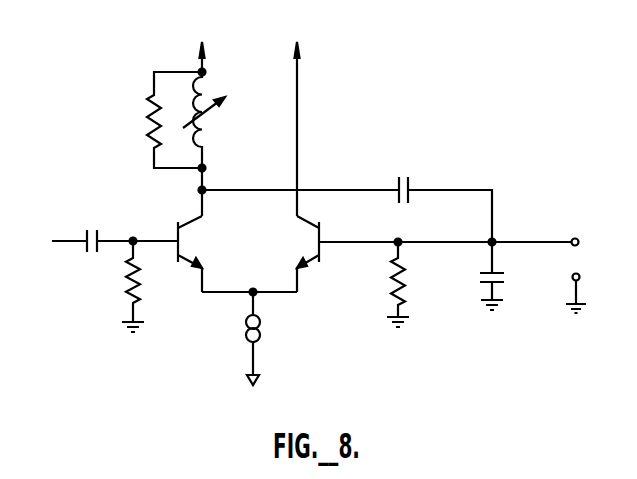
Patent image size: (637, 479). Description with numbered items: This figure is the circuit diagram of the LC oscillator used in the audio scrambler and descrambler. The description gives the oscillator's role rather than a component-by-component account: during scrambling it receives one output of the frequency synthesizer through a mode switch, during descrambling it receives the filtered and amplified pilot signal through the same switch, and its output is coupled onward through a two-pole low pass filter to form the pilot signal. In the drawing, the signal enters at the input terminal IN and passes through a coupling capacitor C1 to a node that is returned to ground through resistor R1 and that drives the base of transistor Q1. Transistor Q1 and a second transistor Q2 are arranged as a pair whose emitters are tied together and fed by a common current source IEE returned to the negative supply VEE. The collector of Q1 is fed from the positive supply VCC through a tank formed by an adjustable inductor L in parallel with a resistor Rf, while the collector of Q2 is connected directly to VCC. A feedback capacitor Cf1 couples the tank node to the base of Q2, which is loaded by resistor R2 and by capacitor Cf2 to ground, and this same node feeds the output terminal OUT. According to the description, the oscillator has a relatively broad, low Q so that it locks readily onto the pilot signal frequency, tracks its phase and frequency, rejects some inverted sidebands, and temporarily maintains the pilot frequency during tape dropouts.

The positive supply voltage VCC is at (251, 110).
The feedback resistor Rf is at (160, 120).
The variable inductor L is at (204, 120).
The feedback capacitor Cf1 is at (347, 191).
The input terminal IN is at (59, 242).
The input coupling capacitor C1 is at (110, 226).
The input resistor R1 is at (143, 286).
The first transistor Q1 is at (172, 254).
The second transistor Q2 is at (340, 254).
The emitter current source IEE is at (271, 338).
The negative supply voltage VEE is at (255, 409).
The load resistor R2 is at (409, 283).
The output capacitor Cf2 is at (468, 275).
The output terminal OUT is at (551, 276).